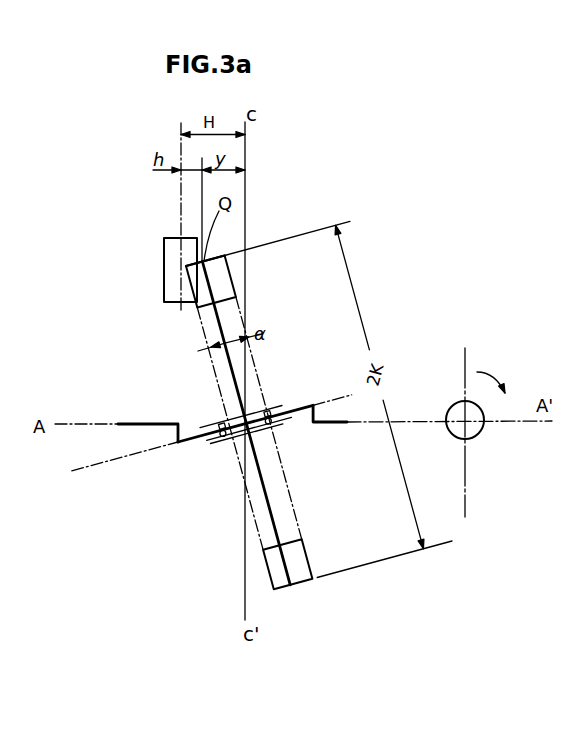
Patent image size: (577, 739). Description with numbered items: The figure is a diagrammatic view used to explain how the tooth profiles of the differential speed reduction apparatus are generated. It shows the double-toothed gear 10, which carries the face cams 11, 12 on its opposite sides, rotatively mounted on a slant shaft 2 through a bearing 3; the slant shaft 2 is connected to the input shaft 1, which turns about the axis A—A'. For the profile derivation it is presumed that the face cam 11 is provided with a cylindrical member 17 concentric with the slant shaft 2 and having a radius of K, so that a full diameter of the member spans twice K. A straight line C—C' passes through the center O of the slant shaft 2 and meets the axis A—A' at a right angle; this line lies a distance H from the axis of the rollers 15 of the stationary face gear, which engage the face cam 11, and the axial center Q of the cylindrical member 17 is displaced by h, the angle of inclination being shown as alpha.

The input shaft 1 is at (142, 423).
The slant shaft 2 is at (188, 444).
The bearing 3 is at (229, 444).
The double-toothed gear 10 is at (233, 372).
The face cam 11 is at (192, 290).
The face cam 12 is at (233, 283).
The rollers 15 is at (173, 238).
The cylindrical member 17 is at (208, 259).